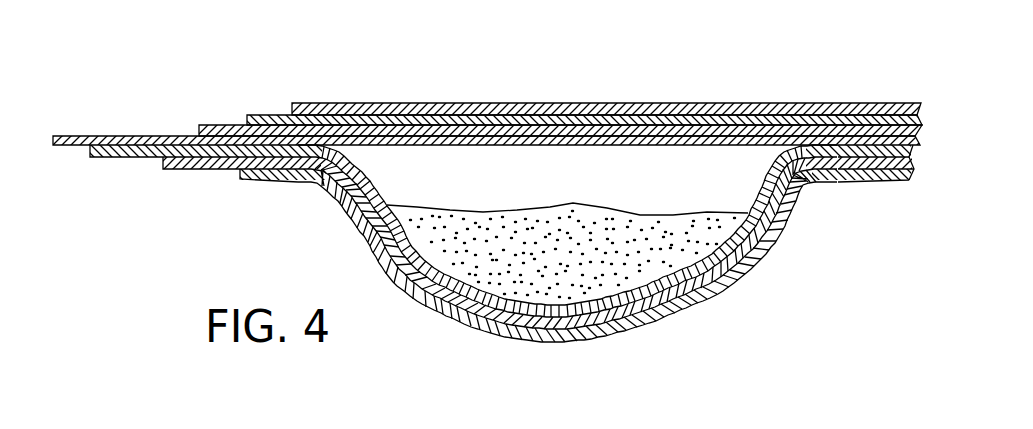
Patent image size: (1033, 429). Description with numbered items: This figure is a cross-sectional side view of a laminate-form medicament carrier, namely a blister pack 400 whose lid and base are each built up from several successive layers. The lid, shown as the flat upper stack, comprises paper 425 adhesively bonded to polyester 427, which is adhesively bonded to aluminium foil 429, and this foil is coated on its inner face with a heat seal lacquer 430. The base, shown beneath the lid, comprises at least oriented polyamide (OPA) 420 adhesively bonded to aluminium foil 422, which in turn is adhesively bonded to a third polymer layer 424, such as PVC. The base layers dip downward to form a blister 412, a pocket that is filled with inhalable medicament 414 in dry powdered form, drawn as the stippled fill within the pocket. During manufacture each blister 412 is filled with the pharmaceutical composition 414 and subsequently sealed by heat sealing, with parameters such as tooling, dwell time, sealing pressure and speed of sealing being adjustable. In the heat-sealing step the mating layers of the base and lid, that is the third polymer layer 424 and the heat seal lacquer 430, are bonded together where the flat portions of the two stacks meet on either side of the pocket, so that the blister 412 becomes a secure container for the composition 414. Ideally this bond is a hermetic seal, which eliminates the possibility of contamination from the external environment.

The blister pack 400 is at (672, 86).
The blister 412 is at (763, 252).
The inhalable medicament 414 is at (662, 272).
The oriented polyamide (OPA) 420 is at (265, 181).
The aluminium foil 422 is at (190, 170).
The third polymer layer 424 is at (118, 158).
The paper 425 is at (330, 103).
The polyester 427 is at (270, 115).
The aluminium foil 429 is at (221, 125).
The heat seal lacquer 430 is at (81, 136).